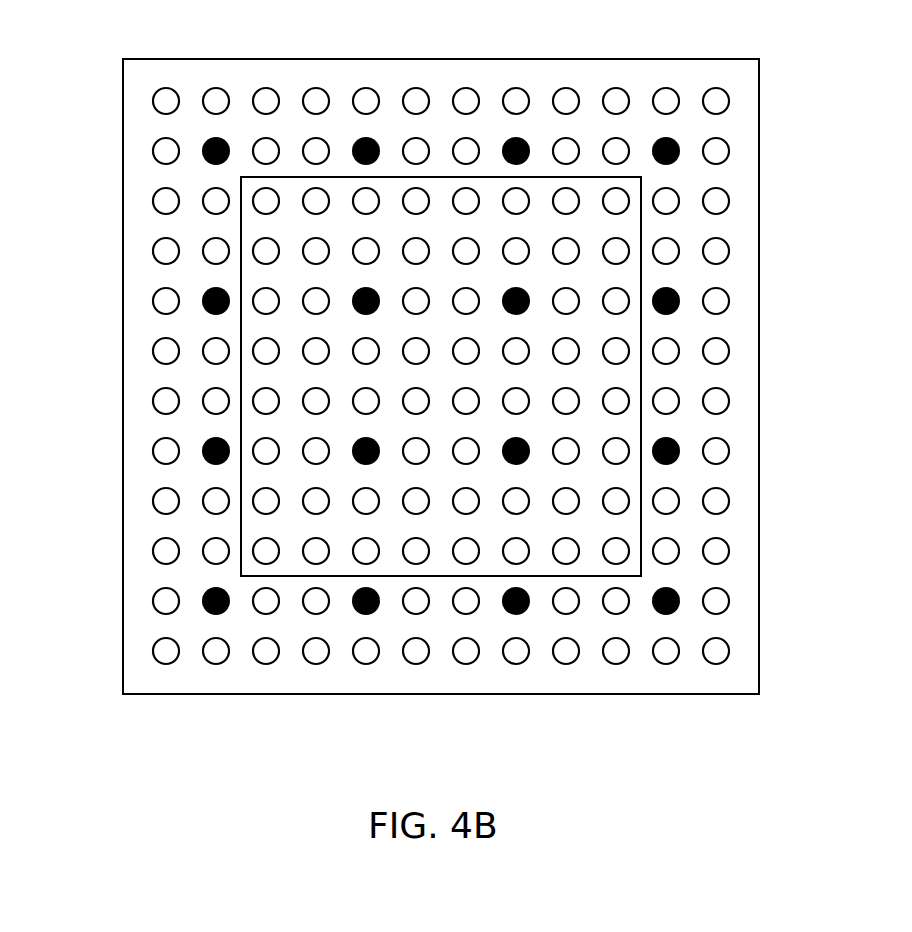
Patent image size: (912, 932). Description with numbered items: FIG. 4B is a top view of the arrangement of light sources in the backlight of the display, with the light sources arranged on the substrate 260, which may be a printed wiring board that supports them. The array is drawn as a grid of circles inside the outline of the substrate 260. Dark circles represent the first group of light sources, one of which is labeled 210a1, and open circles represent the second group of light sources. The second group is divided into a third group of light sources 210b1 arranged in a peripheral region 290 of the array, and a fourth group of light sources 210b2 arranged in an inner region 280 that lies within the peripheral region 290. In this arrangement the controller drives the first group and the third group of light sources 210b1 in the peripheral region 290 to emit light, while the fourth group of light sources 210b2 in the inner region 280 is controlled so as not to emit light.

The substrate 260 is at (122, 277).
The inner region 280 is at (347, 185).
The peripheral region 290 is at (189, 89).
The third group of light sources 210b1 is at (664, 87).
The fourth group of light sources 210b2 is at (255, 192).
The first-type contact pad 210a1 is at (676, 160).